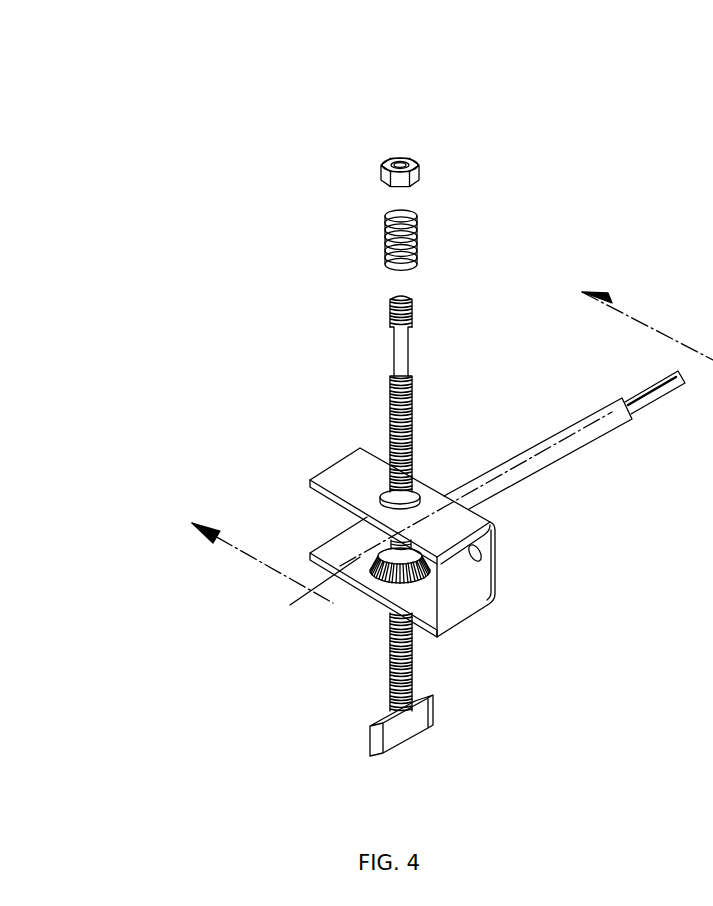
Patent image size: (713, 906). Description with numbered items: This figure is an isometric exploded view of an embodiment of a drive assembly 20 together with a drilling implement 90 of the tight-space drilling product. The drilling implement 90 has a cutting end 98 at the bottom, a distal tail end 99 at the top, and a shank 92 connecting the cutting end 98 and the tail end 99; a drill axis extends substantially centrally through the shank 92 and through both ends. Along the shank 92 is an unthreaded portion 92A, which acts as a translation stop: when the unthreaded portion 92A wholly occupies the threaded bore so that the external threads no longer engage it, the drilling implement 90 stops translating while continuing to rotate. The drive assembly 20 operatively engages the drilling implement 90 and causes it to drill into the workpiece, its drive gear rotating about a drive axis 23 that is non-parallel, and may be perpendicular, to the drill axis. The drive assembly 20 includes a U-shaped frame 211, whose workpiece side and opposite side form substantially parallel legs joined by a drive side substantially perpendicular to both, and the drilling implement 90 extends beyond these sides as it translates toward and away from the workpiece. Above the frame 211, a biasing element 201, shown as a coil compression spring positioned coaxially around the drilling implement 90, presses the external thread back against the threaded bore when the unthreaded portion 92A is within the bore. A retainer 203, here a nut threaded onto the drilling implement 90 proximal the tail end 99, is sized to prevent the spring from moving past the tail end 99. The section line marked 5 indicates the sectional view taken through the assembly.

The drilling implement 90 is at (340, 308).
The retainer 203 is at (403, 157).
The biasing element 201 is at (415, 223).
The tail end 99 is at (410, 287).
The unthreaded portion 92A is at (393, 350).
The shank 92 is at (412, 425).
The drive assembly 20 is at (542, 541).
The frame 211 is at (493, 600).
The drive axis 23 is at (712, 367).
The section line 5- 5 is at (276, 573).
The cutting end 98 is at (402, 743).